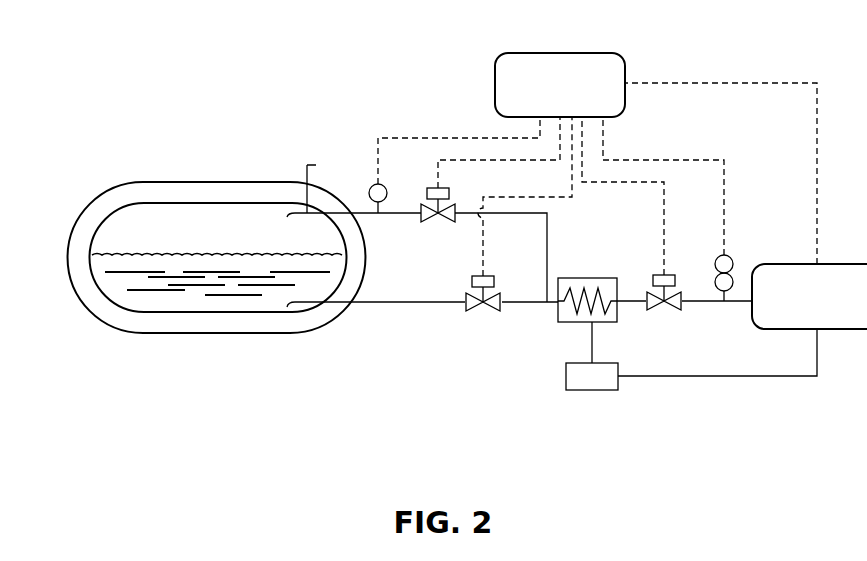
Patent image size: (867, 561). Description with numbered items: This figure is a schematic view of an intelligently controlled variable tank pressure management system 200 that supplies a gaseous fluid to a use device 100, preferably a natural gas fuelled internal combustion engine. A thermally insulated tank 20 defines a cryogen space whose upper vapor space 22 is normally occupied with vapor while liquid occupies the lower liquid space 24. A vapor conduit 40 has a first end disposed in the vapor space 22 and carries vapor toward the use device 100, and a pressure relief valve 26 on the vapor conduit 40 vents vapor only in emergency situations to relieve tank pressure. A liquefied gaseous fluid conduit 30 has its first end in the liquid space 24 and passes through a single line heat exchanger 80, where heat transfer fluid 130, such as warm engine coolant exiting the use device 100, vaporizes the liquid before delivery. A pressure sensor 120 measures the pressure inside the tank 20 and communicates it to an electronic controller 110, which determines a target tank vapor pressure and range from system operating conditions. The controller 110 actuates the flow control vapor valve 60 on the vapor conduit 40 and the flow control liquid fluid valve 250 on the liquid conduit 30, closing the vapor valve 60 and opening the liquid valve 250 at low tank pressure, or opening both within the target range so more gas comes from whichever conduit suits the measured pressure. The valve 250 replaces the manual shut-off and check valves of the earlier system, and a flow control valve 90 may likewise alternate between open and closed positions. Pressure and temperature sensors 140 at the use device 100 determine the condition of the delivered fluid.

The intelligently controlled variable tank pressure management system 200 is at (292, 96).
The tank 20 is at (129, 182).
The vapor space 22 is at (134, 216).
The liquid space 24 is at (157, 298).
The pressure relief valve 26 is at (306, 170).
The liquefied gaseous fluid conduit 30 is at (383, 304).
The vapor conduit 40 is at (398, 215).
The flow control vapor valve 60 is at (446, 219).
The single line heat exchanger 80 is at (560, 324).
The flow control valve 90 is at (670, 312).
The use device 100 is at (800, 309).
The electronic controller 110 is at (545, 95).
The pressure sensor 120 is at (371, 189).
The heat transfer fluid 130 is at (592, 356).
The pressure and temperature sensors 140 is at (733, 262).
The flow control liquid fluid valve 250 is at (469, 309).